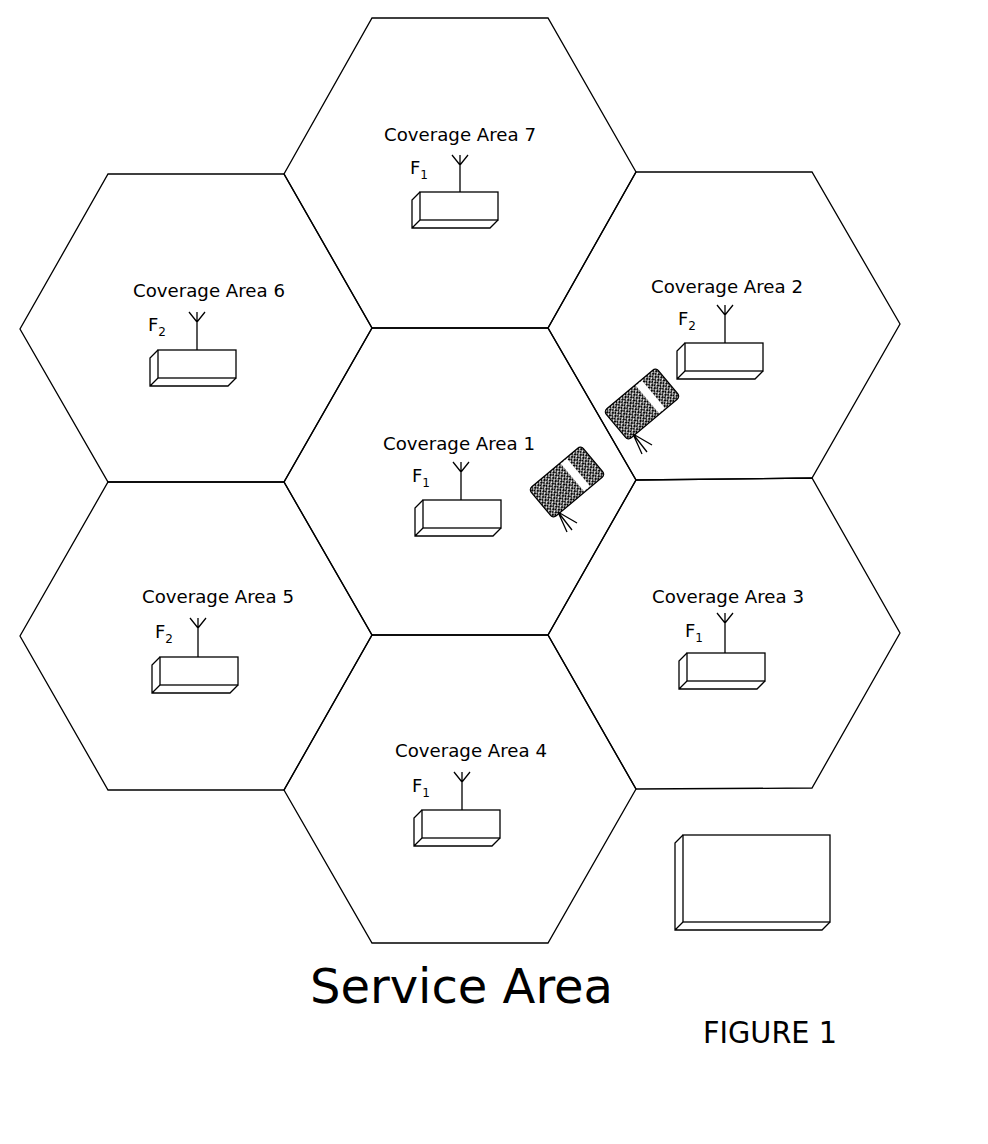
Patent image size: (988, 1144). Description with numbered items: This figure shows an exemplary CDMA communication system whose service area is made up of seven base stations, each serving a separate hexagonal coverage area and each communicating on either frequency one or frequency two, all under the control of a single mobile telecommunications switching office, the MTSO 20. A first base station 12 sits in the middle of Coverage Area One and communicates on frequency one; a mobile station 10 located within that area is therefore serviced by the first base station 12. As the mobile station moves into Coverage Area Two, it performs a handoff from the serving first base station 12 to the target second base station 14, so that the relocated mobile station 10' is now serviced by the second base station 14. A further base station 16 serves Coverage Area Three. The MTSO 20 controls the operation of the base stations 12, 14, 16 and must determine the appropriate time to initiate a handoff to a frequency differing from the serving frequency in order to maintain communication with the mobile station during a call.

The mobile station 10 is at (567, 508).
The mobile station 10' is at (672, 412).
The first base station 12 is at (449, 531).
The second base station 14 is at (745, 379).
The base station 16 is at (738, 684).
The mobile telecommunications switching office (MTSO) 20 is at (750, 929).